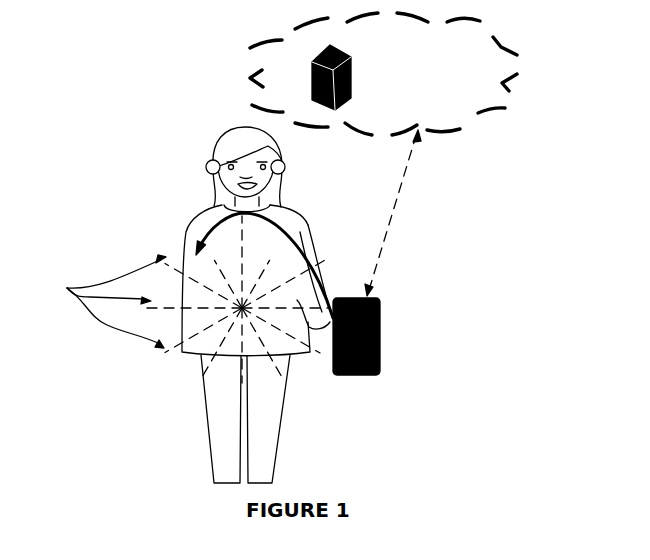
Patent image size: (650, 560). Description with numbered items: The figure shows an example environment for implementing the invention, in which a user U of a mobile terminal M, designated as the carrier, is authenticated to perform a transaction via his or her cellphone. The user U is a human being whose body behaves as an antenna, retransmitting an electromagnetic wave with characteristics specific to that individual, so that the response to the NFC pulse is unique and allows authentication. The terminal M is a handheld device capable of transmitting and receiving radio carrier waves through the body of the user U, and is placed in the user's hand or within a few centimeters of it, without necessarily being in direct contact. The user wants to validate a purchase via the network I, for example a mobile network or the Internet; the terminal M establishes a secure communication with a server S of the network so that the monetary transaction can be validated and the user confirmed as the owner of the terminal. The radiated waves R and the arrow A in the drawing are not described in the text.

The rotational movement arrow of user A is at (200, 228).
The user U is at (309, 250).
The incoming signals / sound R is at (102, 301).
The server S is at (352, 72).
The network I is at (512, 56).
The mobile terminal M is at (378, 322).